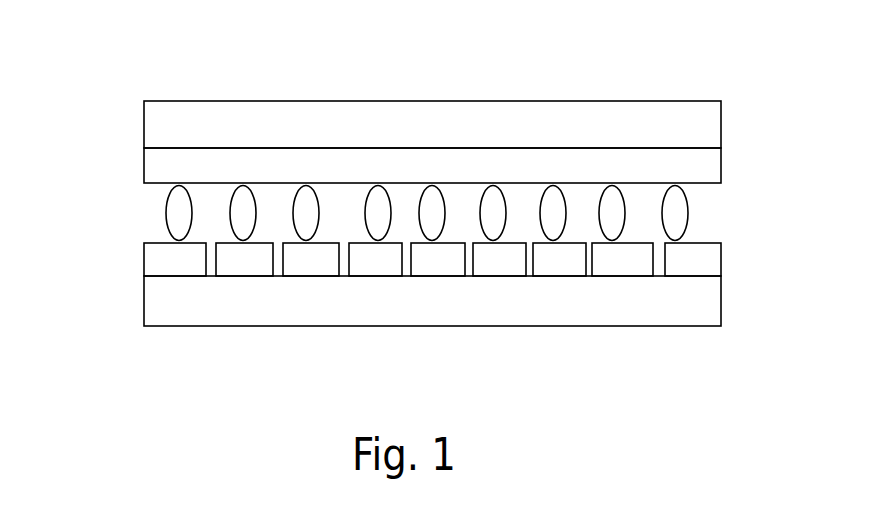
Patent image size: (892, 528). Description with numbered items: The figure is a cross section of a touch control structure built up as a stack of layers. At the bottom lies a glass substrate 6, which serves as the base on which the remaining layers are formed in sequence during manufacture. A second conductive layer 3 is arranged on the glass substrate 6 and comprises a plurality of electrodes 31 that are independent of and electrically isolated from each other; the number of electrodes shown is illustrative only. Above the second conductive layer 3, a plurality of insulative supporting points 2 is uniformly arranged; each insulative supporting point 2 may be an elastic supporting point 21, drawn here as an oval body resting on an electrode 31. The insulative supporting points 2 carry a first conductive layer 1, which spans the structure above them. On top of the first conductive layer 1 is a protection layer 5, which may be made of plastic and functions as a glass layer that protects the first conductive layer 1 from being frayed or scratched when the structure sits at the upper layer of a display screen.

The first conductive layer 1 is at (689, 166).
The protection layer 5 is at (683, 123).
The insulative supporting points 2 is at (437, 280).
The elastic supporting point 21 is at (183, 213).
The second conductive layer 3 is at (479, 320).
The electrodes 31 is at (168, 257).
The glass substrate 6 is at (721, 304).